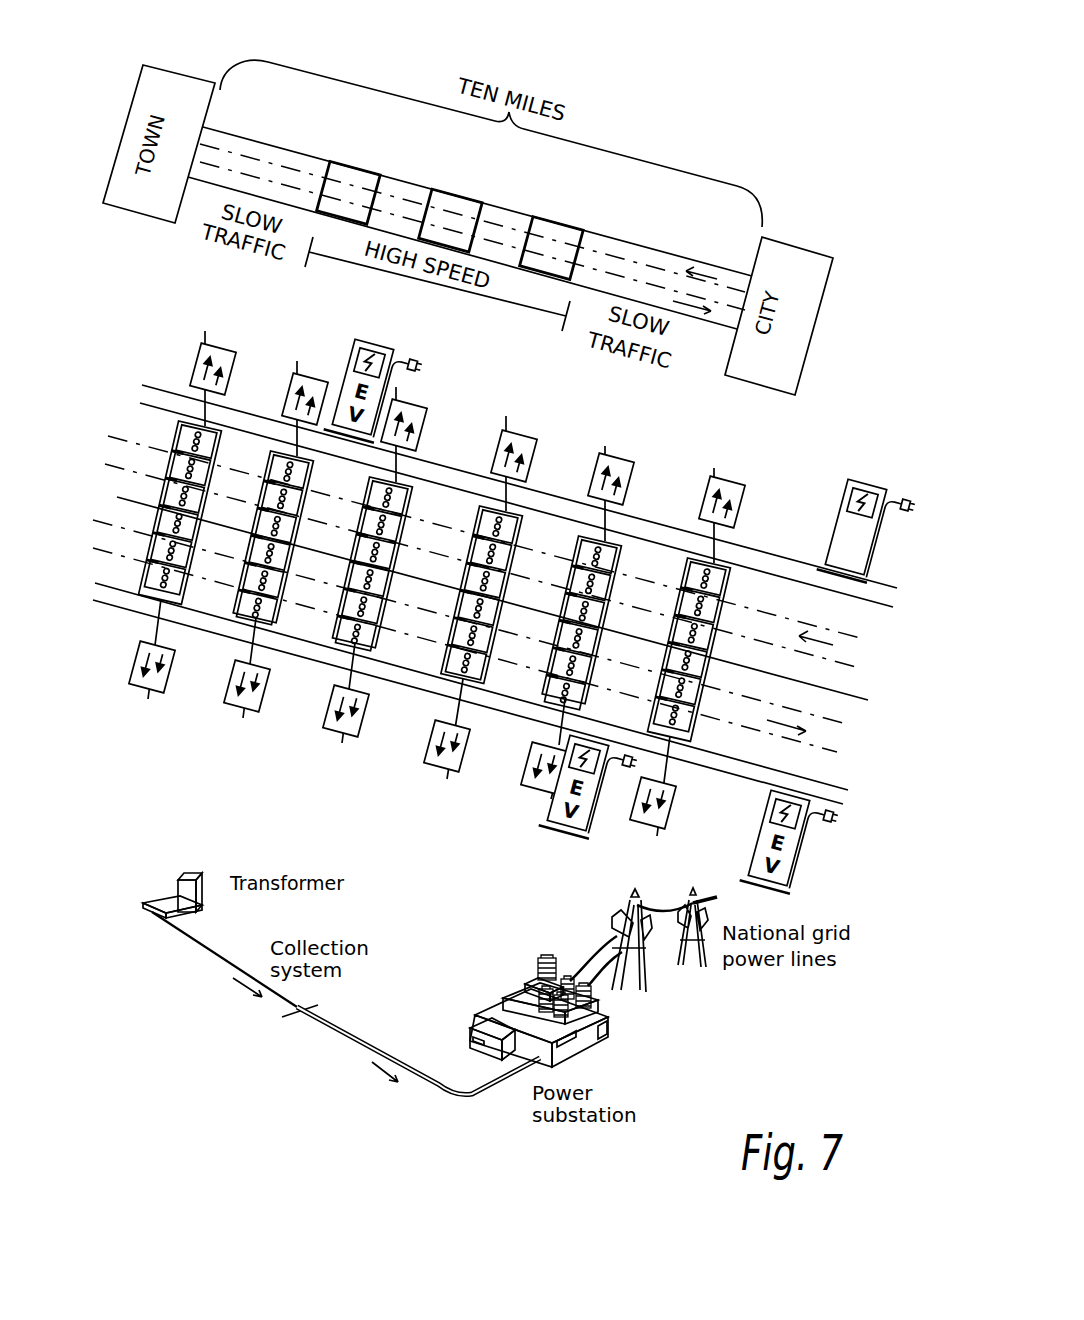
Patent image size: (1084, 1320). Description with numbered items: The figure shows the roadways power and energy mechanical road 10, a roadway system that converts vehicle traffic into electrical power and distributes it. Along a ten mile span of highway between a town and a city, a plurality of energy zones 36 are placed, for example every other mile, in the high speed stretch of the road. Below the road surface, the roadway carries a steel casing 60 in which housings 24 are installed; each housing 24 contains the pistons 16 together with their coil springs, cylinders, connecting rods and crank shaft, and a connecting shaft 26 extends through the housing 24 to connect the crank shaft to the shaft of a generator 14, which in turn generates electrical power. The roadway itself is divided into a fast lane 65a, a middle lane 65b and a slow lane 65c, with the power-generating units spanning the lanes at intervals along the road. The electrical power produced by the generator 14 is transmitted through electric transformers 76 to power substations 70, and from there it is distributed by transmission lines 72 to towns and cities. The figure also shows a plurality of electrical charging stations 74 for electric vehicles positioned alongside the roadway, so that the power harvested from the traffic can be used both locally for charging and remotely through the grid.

The roadways power and energy mechanical road 10 is at (418, 935).
The generator 14 is at (523, 778).
The pistons 16 is at (690, 588).
The housing 24 is at (693, 652).
The connecting shaft 26 is at (548, 727).
The energy zones 36 is at (358, 162).
The steel casing 60 is at (709, 676).
The fast lane 65a is at (227, 540).
The middle lane 65b is at (322, 593).
The slow lane 65c is at (413, 650).
The power substation 70 is at (588, 1040).
The transmission lines 72 is at (593, 980).
The electrical charging stations 74 is at (840, 500).
The transformer 76 is at (202, 897).